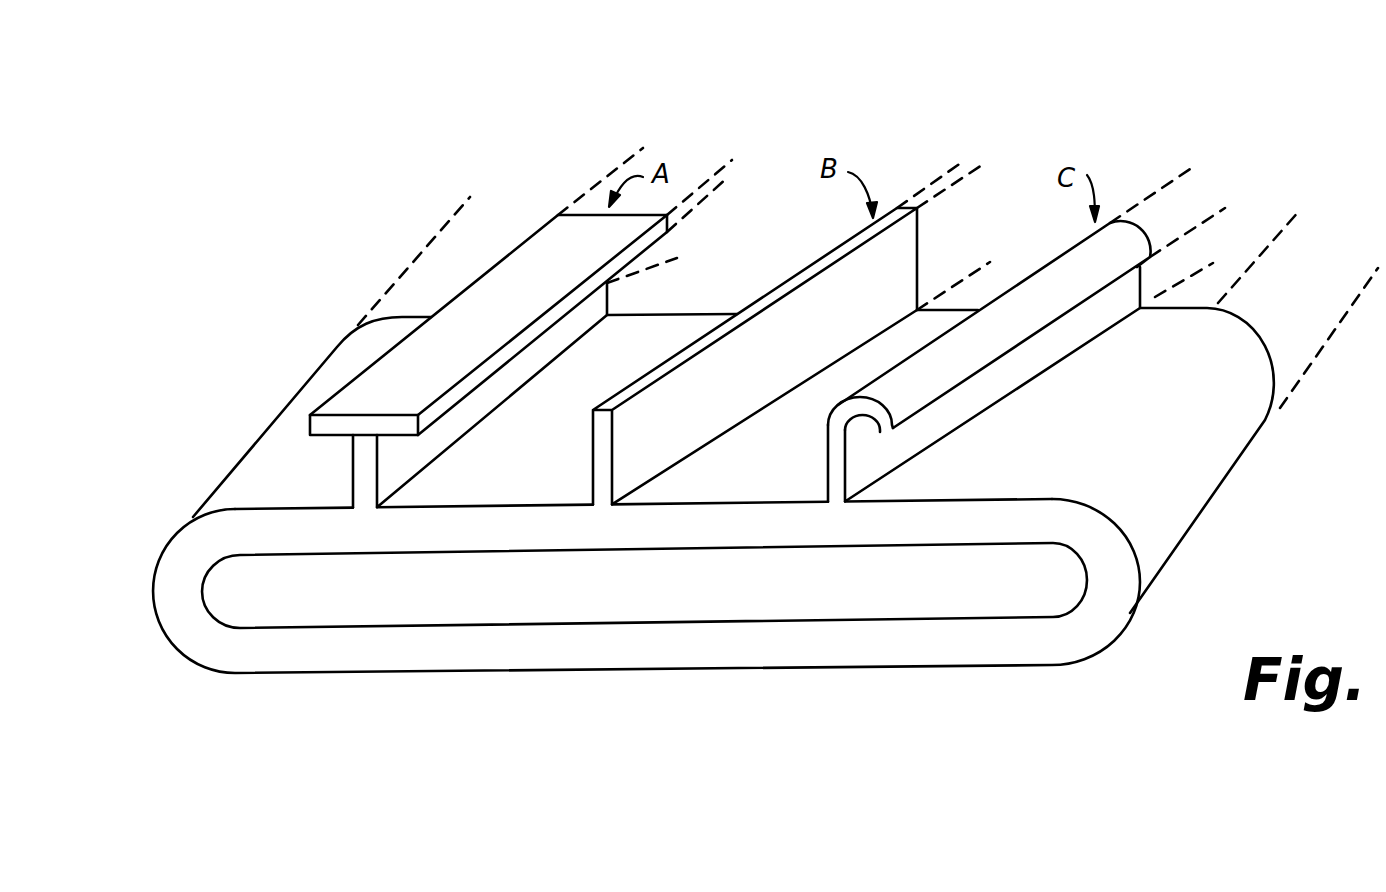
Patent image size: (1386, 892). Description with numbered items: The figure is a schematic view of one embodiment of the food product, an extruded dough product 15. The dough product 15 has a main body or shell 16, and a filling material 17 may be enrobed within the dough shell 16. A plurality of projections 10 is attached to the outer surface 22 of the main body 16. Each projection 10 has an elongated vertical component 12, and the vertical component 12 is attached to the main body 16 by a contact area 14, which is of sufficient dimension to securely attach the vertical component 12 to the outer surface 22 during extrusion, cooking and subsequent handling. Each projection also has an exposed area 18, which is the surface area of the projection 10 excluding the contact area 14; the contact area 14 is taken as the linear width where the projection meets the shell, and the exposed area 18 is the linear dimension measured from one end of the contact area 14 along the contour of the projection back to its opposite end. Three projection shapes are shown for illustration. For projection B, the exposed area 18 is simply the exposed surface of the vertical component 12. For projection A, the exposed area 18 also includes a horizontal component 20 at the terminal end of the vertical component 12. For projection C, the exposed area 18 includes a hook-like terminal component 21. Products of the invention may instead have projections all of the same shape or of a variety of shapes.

The projection 10 is at (576, 156).
The vertical component 12 is at (353, 470).
The contact area 14 is at (364, 522).
The dough product 15 is at (283, 205).
The main body or shell 16 is at (152, 540).
The filling material 17 is at (240, 598).
The exposed area 18 is at (377, 458).
The horizontal component 20 is at (321, 425).
The hook-like terminal component 21 is at (848, 412).
The outer surface 22 is at (216, 512).